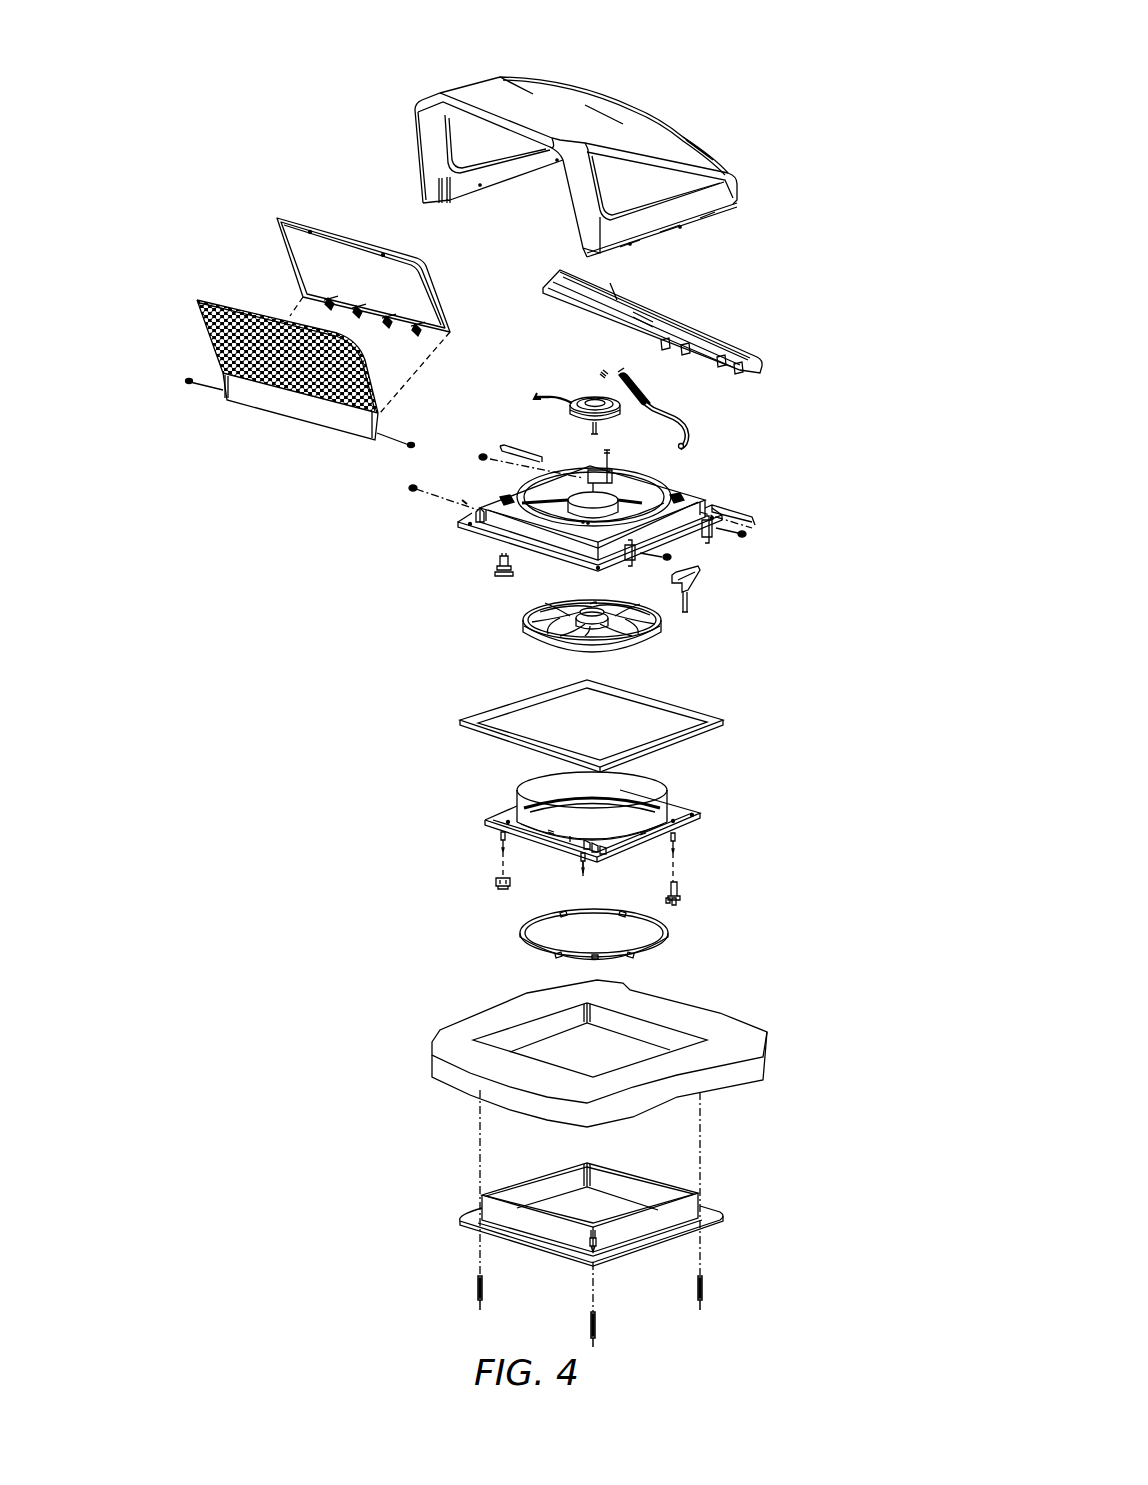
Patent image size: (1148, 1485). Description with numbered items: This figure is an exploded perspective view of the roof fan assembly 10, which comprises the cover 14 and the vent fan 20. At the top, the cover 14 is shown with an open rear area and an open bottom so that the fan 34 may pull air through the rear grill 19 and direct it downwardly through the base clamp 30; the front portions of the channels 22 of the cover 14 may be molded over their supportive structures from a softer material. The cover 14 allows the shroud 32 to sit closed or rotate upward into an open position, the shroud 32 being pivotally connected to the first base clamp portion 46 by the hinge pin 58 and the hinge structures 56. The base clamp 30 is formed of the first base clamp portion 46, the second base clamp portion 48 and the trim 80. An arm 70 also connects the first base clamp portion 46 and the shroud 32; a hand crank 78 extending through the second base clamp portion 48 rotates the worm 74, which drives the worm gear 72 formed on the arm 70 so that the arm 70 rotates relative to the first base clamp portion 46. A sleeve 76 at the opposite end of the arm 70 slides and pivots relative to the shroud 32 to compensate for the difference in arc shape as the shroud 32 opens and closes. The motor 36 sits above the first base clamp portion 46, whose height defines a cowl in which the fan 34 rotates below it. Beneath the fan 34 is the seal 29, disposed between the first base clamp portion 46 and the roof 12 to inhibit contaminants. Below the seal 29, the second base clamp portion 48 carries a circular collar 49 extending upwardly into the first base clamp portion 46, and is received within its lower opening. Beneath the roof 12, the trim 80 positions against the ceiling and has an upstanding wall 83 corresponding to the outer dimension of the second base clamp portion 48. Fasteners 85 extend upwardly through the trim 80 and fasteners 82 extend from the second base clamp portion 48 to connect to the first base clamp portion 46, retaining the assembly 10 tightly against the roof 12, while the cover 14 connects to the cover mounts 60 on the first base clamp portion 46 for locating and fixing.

The roof fan assembly 10 is at (208, 98).
The roof 12 is at (737, 1040).
The cover 14 is at (575, 46).
The grill 19 is at (180, 337).
The vent fan 20 is at (857, 290).
The channels 22 is at (448, 215).
The seal 29 is at (462, 750).
The base clamp 30 is at (786, 476).
The shroud 32 is at (722, 287).
The fan 34 is at (668, 648).
The motor 36 is at (578, 385).
The first base clamp portion 46 is at (698, 465).
The second base clamp portion 48 is at (720, 856).
The collar 49 is at (665, 782).
The hinge structures 56 is at (683, 355).
The hinge pin 58 is at (520, 455).
The cover mounts 60 is at (718, 538).
The arm 70 is at (718, 428).
The worm gear 72 is at (672, 450).
The worm 74 is at (708, 603).
The sleeve 76 is at (632, 380).
The hand crank 78 is at (688, 900).
The trim 80 is at (748, 1196).
The fasteners 82 is at (500, 842).
The upstanding wall 83 is at (640, 1185).
The fasteners 85 is at (473, 1290).